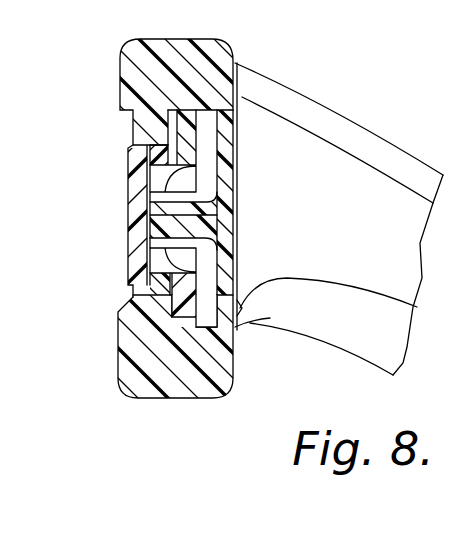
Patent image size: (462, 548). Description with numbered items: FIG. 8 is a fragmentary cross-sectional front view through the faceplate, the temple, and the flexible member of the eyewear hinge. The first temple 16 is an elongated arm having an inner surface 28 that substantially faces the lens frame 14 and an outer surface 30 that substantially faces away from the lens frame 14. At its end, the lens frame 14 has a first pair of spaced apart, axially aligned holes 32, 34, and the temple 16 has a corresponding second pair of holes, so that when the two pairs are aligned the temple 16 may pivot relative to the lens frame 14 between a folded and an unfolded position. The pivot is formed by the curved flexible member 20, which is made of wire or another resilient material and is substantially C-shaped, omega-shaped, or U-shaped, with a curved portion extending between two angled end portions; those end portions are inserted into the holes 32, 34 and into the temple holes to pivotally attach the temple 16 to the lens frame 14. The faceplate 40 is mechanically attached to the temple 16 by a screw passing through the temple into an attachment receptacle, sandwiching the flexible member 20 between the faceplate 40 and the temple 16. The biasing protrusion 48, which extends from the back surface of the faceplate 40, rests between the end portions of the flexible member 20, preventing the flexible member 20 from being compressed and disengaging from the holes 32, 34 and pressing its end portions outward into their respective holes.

The inner surface 28 is at (120, 87).
The hole 32 is at (207, 122).
The first temple 16 is at (355, 150).
The lens frame 14 is at (232, 140).
The biasing protrusion 48 is at (163, 197).
The faceplate 40 is at (140, 214).
The flexible member 20 is at (173, 258).
The hole 34 is at (205, 305).
The outer surface 30 is at (372, 243).